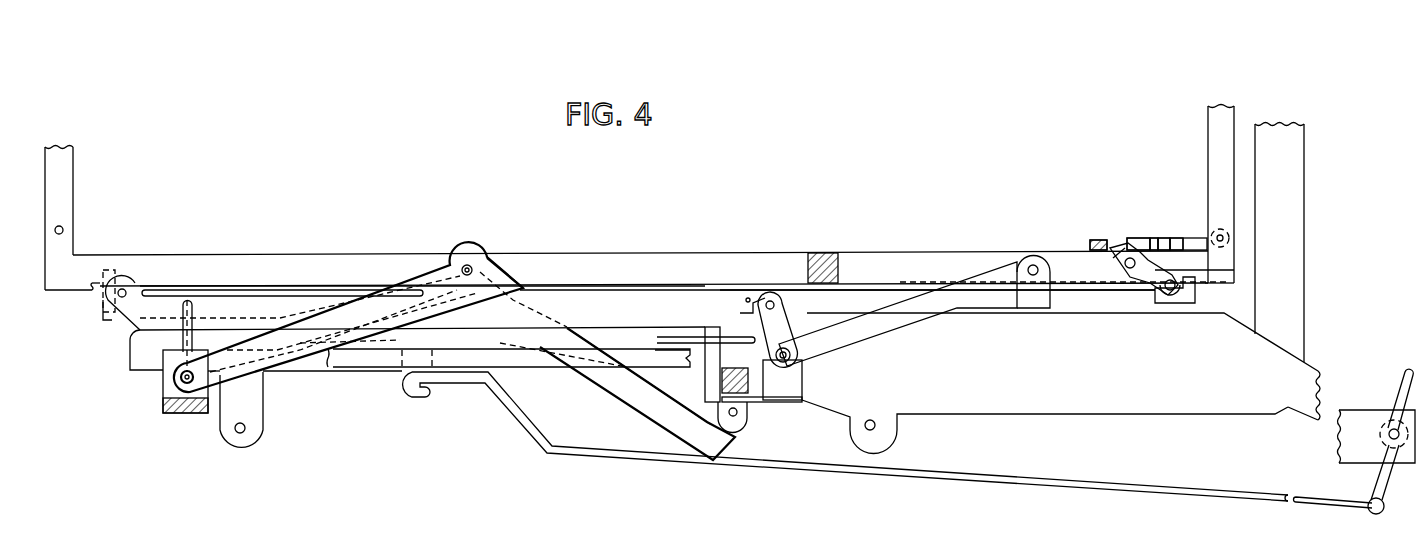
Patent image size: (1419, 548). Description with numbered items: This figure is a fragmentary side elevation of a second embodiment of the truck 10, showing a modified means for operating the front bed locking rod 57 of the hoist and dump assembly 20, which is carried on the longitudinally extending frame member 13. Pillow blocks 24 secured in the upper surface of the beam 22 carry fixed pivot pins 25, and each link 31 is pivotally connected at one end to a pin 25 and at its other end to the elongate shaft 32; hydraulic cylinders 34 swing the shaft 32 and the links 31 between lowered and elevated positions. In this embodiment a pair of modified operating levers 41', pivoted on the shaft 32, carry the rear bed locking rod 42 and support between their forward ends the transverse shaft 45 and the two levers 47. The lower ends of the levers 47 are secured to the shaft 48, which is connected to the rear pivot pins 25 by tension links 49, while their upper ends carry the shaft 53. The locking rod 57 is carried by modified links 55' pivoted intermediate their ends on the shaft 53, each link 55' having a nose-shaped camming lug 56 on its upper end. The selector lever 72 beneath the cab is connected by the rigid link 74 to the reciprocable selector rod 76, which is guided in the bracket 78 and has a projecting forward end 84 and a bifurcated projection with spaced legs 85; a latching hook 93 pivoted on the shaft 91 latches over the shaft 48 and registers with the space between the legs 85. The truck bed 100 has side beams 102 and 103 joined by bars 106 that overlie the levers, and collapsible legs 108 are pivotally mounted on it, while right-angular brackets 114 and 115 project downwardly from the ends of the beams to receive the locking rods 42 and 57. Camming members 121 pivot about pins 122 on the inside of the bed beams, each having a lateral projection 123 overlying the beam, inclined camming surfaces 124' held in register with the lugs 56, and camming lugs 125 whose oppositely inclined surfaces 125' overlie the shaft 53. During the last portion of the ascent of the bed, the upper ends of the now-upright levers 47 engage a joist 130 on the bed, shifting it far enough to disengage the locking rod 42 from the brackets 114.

The truck 10 is at (1326, 112).
The frame member 13 is at (1075, 402).
The hoist and dump assembly 20 is at (556, 288).
The beam 22 is at (184, 415).
The pillow blocks 24 is at (133, 368).
The pivot pins 25 is at (180, 384).
The links 31 is at (270, 360).
The rod or shaft 32 is at (470, 264).
The hydraulic cylinders 34 is at (632, 402).
The modified operating levers 41' is at (647, 292).
The bed locking rod 42 is at (127, 286).
The transverse shaft 45 is at (1030, 266).
The levers 47 is at (1060, 282).
The rod or shaft 48 is at (792, 360).
The tension links 49 is at (330, 368).
The shaft 53 is at (1105, 248).
The modified links 55' is at (1125, 276).
The camming lugs 56 is at (1138, 240).
The bed locking rod 57 is at (1165, 290).
The selector arm or lever 72 is at (1395, 405).
The rigid link 74 is at (990, 487).
The selector rod 76 is at (357, 368).
The guide bracket 78 is at (703, 327).
The forward end of selector rod 84 is at (758, 388).
The legs 85 is at (740, 337).
The rod or shaft 91 is at (768, 300).
The latching hook 93 is at (790, 330).
The truck bed 100 is at (323, 253).
The side beam 102 is at (1232, 270).
The side beam 103 is at (913, 262).
The bars 106 is at (838, 254).
The collapsible legs 108 is at (1233, 112).
The hook member or bracket 114 is at (105, 312).
The hook member or bracket 115 is at (1188, 305).
The camming members 121 is at (1195, 240).
The pins 122 is at (1232, 240).
The lateral projection 123 is at (1176, 240).
The inclined camming surfaces 124' is at (1151, 206).
The camming lugs 125 is at (1125, 196).
The oppositely inclined camming surfaces 125' is at (1080, 204).
The joist 130 is at (1087, 244).